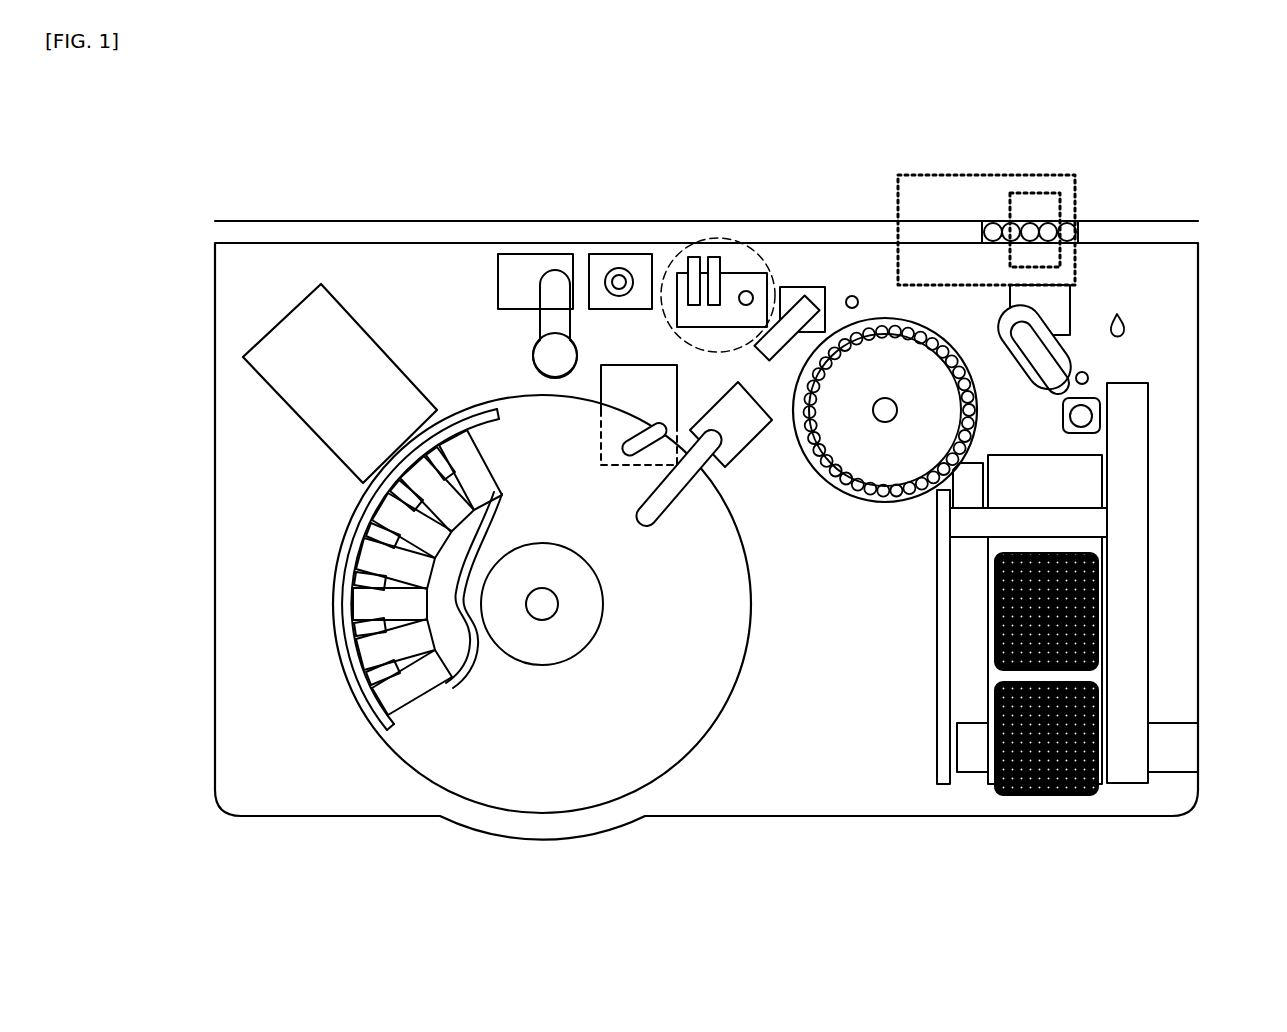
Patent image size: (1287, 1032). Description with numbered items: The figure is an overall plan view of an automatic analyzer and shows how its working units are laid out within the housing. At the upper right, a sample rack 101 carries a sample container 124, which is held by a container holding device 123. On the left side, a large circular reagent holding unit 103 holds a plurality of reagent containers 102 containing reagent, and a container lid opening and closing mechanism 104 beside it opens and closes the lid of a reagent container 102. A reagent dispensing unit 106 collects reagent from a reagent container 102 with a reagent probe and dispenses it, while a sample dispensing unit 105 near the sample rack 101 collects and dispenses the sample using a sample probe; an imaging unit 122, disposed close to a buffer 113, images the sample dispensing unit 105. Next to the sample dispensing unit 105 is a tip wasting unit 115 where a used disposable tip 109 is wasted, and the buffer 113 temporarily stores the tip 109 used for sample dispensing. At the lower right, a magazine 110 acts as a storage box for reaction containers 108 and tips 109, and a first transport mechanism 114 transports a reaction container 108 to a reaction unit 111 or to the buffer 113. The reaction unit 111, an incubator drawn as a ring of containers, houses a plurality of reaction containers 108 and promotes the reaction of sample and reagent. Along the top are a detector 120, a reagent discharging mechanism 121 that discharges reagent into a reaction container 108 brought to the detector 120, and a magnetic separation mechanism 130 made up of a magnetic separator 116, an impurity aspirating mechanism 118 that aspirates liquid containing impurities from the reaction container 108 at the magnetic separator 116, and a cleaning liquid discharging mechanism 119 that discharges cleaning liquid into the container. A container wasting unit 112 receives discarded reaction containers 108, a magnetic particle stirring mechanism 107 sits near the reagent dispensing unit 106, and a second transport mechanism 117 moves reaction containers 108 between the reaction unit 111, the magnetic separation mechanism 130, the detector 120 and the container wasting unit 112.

The sample rack 101 is at (1018, 221).
The reagent container 102 is at (438, 413).
The reagent holding unit 103 is at (490, 400).
The container lid opening and closing mechanism 104 is at (278, 322).
The sample dispensing unit 105 is at (1070, 290).
The reagent dispensing unit 106 is at (752, 445).
The magnetic particle stirring mechanism 107 is at (628, 462).
The reaction container 108 is at (1015, 795).
The disposable tip 109 is at (1067, 795).
The magazine 110 is at (1098, 795).
The reaction unit 111 is at (880, 318).
The container wasting unit 112 is at (852, 296).
The buffer 113 is at (1088, 377).
The first transport mechanism 114 is at (988, 483).
The tip wasting unit 115 is at (1120, 320).
The magnetic separator 116 is at (746, 290).
The second transport mechanism 117 is at (810, 287).
The impurity aspirating mechanism 118 is at (690, 257).
The cleaning liquid discharging mechanism 119 is at (713, 257).
The detector 120 is at (608, 253).
The reagent discharging mechanism 121 is at (527, 254).
The imaging unit 122 is at (1100, 416).
The container holding device 123 is at (960, 174).
The sample container 124 is at (1050, 223).
The magnetic separation mechanism 130 is at (693, 333).